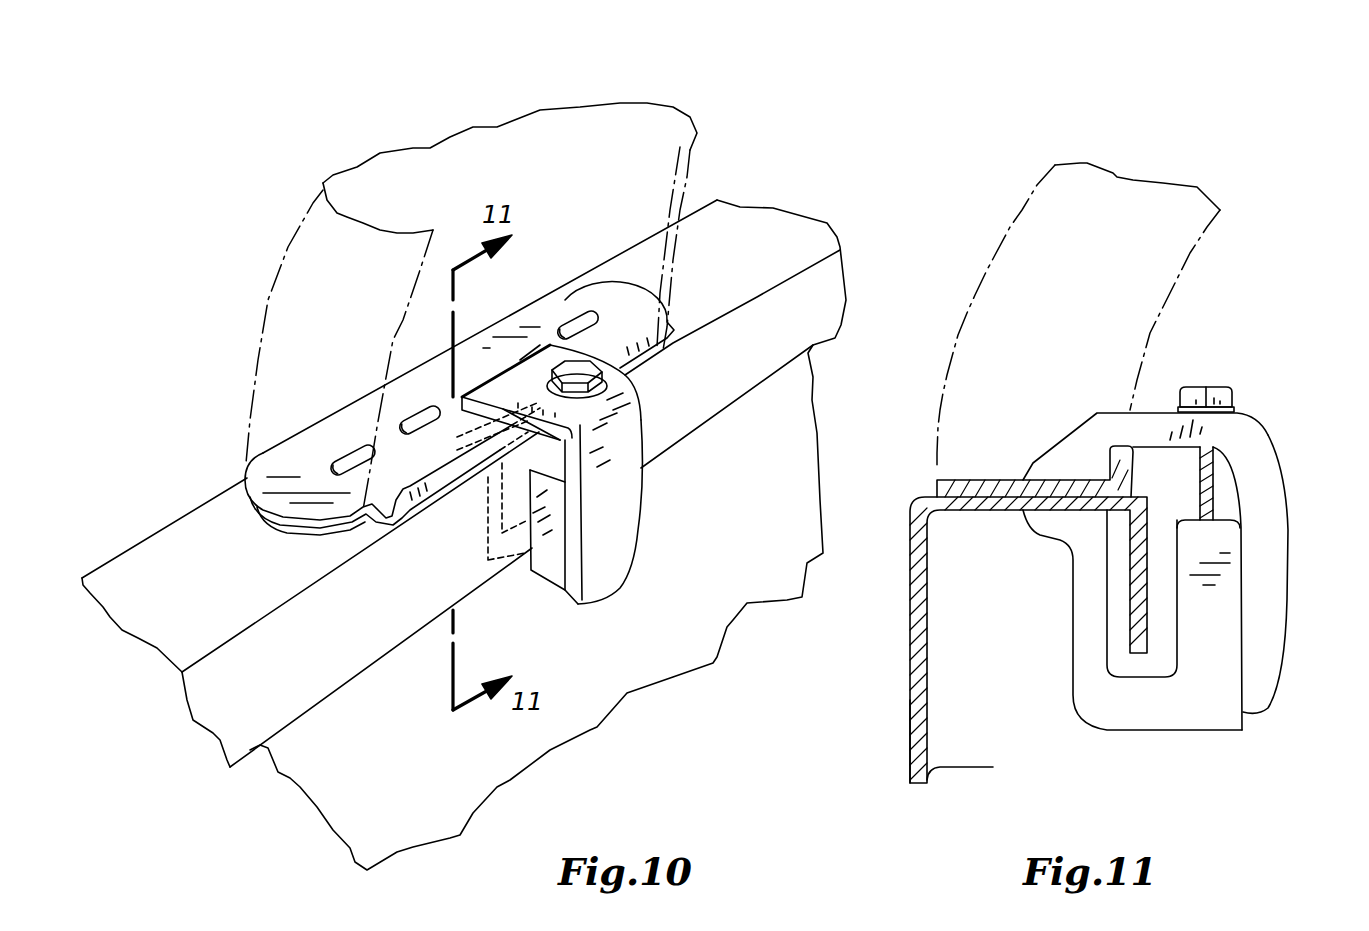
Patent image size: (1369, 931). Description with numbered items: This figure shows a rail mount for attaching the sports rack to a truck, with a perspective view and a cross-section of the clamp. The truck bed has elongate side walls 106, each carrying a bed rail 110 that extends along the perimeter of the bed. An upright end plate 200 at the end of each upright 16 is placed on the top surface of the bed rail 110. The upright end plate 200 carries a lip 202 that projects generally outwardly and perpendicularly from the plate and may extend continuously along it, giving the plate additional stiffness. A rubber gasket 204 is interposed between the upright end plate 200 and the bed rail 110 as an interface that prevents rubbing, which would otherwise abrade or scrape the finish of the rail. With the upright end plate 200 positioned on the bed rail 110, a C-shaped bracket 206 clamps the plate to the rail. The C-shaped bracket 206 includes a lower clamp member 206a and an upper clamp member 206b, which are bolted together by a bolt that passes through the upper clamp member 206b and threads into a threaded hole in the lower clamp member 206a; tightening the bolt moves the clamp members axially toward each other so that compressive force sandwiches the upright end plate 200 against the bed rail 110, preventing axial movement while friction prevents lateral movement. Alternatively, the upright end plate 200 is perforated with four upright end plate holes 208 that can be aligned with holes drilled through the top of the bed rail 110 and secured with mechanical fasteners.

In FIG. 10, the upright 16 is at (657, 105).
In FIG. 11, the upright 16 is at (1113, 175).
In FIG. 11, the side wall 106 is at (908, 740).
In FIG. 10, the bed rail 110 is at (833, 267).
In FIG. 11, the bed rail 110 is at (984, 512).
In FIG. 10, the upright end plate 200 is at (623, 303).
In FIG. 11, the upright end plate 200 is at (982, 480).
In FIG. 10, the lip 202 is at (605, 358).
In FIG. 11, the lip 202 is at (1147, 443).
In FIG. 10, the rubber gasket 204 is at (248, 505).
In FIG. 10, the C-shaped bracket 206 is at (638, 526).
In FIG. 11, the C-shaped bracket 206 is at (1290, 570).
In FIG. 10, the lower clamp member 206a is at (538, 572).
In FIG. 11, the lower clamp member 206a is at (1205, 728).
In FIG. 10, the upper clamp member 206b is at (610, 553).
In FIG. 11, the upper clamp member 206b is at (1257, 457).
In FIG. 10, the upright end plate hole 208 is at (572, 313).